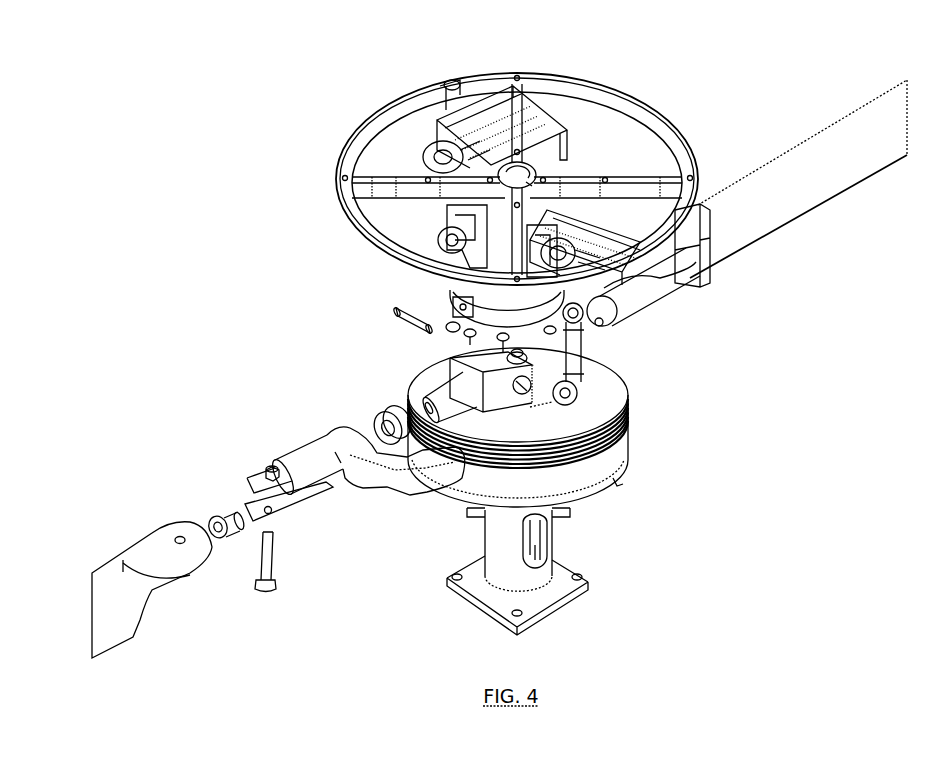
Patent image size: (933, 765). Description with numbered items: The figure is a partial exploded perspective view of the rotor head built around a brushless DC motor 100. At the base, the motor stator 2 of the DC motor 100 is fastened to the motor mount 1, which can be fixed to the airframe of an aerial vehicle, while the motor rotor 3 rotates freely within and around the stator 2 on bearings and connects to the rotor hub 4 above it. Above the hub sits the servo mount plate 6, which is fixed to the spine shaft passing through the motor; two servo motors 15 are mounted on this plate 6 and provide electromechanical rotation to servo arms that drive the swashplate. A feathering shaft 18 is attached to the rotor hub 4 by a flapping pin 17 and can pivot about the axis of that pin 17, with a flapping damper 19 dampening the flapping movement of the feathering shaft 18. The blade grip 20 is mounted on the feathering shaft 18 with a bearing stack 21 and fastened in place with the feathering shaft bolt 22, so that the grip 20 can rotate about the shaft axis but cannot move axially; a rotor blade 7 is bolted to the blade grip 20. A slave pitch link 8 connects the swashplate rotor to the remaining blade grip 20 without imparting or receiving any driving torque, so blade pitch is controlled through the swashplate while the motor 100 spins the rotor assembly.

The motor mount 1 is at (570, 602).
The motor stator 2 is at (622, 492).
The motor rotor 3 is at (615, 448).
The rotor hub 4 is at (440, 356).
The servo mount plate 6 is at (338, 157).
The rotor blade 7 is at (160, 518).
The slave pitch link 8 is at (585, 362).
The servo motor 15 is at (467, 135).
The flapping pin 17 is at (395, 313).
The feathering shaft 18 is at (423, 387).
The flapping damper 19 is at (375, 413).
The blade grip 20 is at (282, 452).
The bearing stack 21 is at (320, 492).
The feathering shaft bolt 22 is at (207, 507).
The brushless DC motor 100 is at (503, 500).